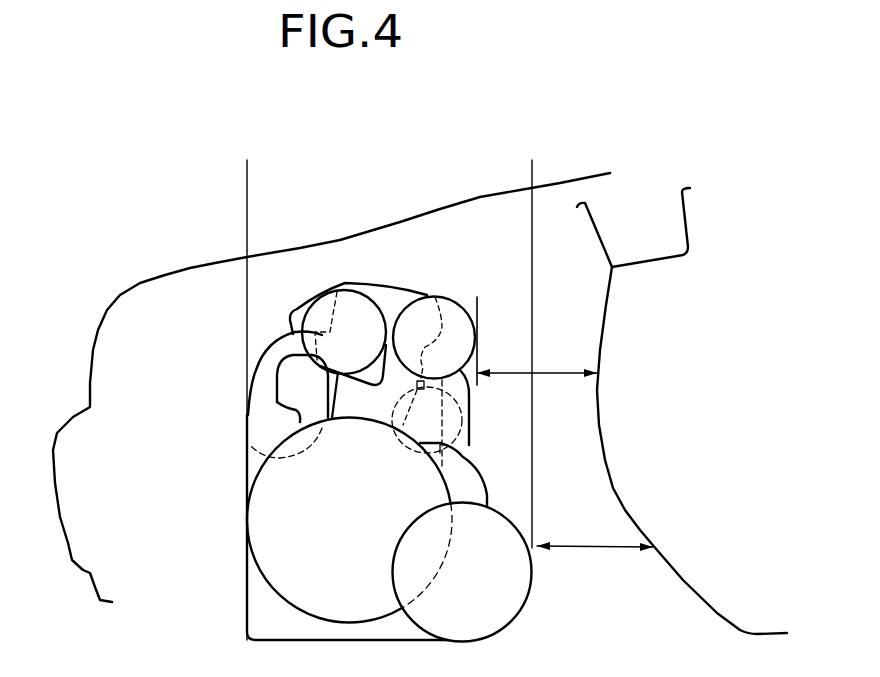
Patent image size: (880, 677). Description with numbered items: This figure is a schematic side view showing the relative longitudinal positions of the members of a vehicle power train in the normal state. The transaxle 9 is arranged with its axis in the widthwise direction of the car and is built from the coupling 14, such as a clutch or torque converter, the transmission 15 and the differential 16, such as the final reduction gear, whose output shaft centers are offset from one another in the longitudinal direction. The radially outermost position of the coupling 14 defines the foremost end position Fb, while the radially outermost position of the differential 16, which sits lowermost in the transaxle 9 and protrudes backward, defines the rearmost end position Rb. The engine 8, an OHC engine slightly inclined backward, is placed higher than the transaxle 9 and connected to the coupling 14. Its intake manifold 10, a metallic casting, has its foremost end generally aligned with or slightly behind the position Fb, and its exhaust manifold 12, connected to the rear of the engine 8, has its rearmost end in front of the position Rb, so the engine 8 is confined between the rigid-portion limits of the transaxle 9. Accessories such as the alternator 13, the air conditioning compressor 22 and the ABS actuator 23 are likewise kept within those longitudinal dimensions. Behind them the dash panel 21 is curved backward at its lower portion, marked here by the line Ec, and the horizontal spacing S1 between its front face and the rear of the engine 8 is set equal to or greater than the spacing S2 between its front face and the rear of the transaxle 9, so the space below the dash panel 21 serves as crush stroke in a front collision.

The engine 8 is at (387, 287).
The transaxle 9 is at (233, 555).
The intake manifold 10 is at (285, 342).
The exhaust manifold 12 is at (468, 402).
The alternator 13 is at (323, 298).
The coupling 14 is at (253, 480).
The transmission 15 is at (487, 495).
The differential 16 is at (532, 597).
The dash panel 21 is at (610, 293).
The air conditioning compressor 22 is at (447, 297).
The ABS actuator 23 is at (460, 430).
The foremost end position Fb is at (245, 399).
The rearmost end position Rb is at (539, 337).
The engine compartment wall Ec is at (583, 467).
The spacing S1 is at (537, 341).
The spacing S2 is at (595, 562).